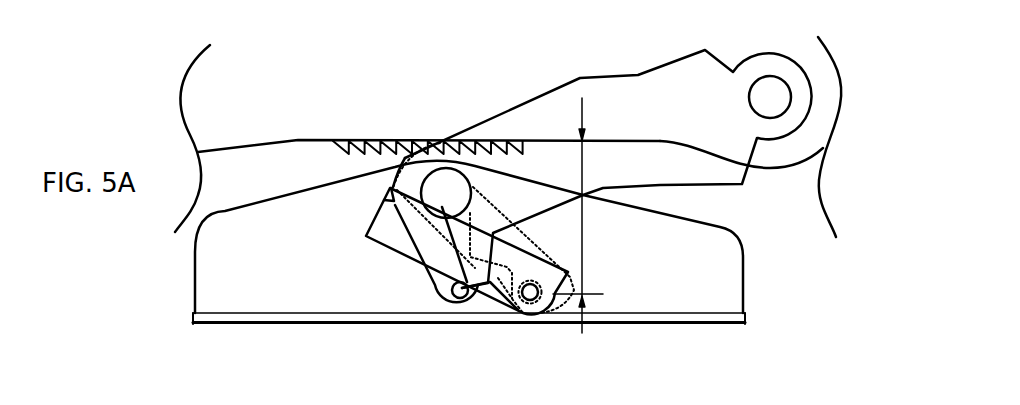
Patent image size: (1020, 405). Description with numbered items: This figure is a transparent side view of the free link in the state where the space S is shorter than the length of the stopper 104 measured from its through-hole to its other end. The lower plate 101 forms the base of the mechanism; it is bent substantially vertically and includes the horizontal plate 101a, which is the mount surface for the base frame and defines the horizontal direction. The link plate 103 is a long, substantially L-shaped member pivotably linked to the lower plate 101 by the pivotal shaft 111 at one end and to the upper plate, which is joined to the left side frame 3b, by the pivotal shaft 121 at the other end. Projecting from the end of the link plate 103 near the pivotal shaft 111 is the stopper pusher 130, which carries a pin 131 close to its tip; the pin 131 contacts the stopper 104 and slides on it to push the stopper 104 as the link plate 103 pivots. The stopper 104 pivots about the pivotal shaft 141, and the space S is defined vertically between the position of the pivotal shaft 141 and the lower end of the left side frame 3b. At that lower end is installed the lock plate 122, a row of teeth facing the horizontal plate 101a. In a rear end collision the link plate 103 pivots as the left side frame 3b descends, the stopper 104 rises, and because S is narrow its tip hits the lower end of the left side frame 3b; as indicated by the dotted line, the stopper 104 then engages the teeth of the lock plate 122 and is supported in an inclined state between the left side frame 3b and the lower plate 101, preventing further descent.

The lower plate 101 is at (740, 307).
The horizontal plate 101a is at (205, 313).
The link plate 103 is at (588, 76).
The stopper 104 is at (393, 249).
The pivotal shaft 111 is at (442, 185).
The pivotal shaft 121 is at (776, 97).
The lock plate 122 is at (345, 141).
The stopper pusher 130 is at (423, 271).
The pin 131 is at (460, 298).
The pivotal shaft 141 is at (522, 311).
The left side frame 3b is at (773, 170).
The space S is at (603, 295).